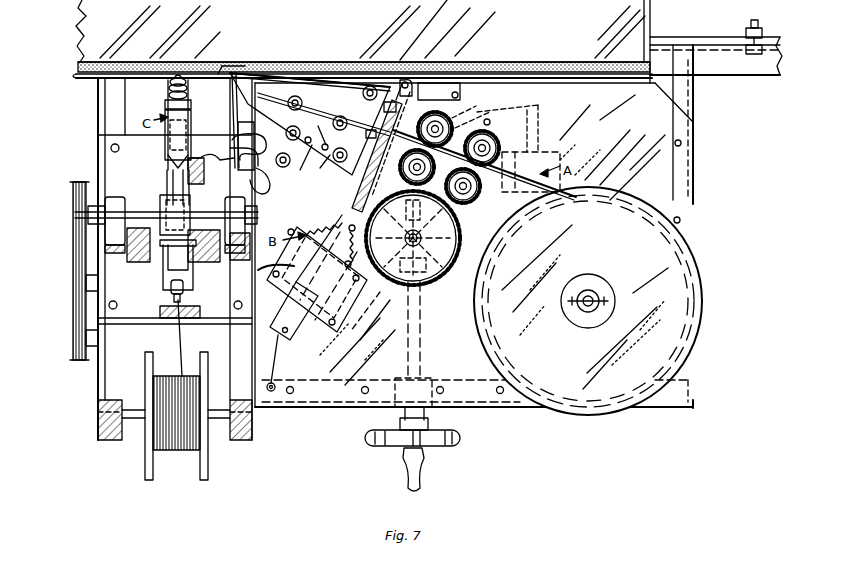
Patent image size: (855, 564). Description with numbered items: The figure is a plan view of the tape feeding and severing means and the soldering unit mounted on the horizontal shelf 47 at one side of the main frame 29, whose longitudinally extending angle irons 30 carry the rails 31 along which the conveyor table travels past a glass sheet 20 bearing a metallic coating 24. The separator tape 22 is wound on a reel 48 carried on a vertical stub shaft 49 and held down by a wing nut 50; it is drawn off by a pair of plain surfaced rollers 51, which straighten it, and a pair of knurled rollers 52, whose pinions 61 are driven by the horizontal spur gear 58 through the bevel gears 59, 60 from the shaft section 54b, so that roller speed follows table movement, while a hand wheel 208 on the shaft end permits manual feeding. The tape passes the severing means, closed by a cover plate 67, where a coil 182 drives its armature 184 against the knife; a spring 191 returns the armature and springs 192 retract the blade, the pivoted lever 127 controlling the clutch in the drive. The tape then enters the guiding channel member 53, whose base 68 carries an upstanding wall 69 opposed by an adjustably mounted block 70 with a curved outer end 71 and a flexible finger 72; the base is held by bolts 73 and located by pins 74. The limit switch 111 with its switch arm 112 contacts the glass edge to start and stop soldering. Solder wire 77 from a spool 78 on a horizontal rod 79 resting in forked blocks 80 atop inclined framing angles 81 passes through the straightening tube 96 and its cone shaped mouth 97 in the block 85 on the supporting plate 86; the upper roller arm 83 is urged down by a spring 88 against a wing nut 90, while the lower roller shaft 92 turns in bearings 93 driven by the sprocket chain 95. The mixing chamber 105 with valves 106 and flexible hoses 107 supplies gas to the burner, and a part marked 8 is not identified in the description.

The glass sheet 20 is at (112, 6).
The separator tape 22 is at (162, 70).
The metallic coating 24 is at (520, 66).
The main frame 29 is at (735, 60).
The angle irons 30 is at (768, 66).
The rails 31 is at (715, 40).
The horizontal shelf 47 is at (660, 190).
The reel 48 is at (668, 290).
The vertical stub shaft 49 is at (584, 310).
The wing nut 50 is at (592, 292).
The plain surfaced feed rollers 51 is at (488, 142).
The knurled feed rollers 52 is at (442, 122).
The guiding channel member 53 is at (301, 165).
The shaft section 54b is at (415, 326).
The horizontal spur gear 58 is at (372, 316).
The bevel gear 59 is at (415, 244).
The bevel gear 60 is at (452, 228).
The pinions 61 is at (508, 146).
The cover plate 67 is at (362, 180).
The base 68 is at (324, 170).
The upstanding wall 69 is at (318, 74).
The adjustably mounted block 70 is at (282, 88).
The curved outer end 71 is at (252, 72).
The flexible finger 72 is at (233, 70).
The bolts 73 is at (324, 127).
The locating pins 74 is at (317, 129).
The solder wire 77 is at (184, 345).
The spool 78 is at (210, 462).
The horizontal rod 79 is at (138, 424).
The forked blocks 80 is at (104, 438).
The inclined framing angles 81 is at (108, 386).
The arm 83 is at (168, 170).
The block 85 is at (194, 278).
The supporting plate 86 is at (142, 316).
The spring 88 is at (165, 104).
The wing nut 90 is at (188, 90).
The shaft 92 is at (148, 212).
The bearings 93 is at (114, 200).
The sprocket chain 95 is at (74, 306).
The straightening tube 96 is at (170, 284).
The cone shaped mouth 97 is at (174, 297).
The mixing chamber 105 is at (242, 140).
The valves 106 is at (240, 128).
The flexible hoses 107 is at (268, 190).
The limit switch 111 is at (452, 88).
The switch arm 112 is at (408, 82).
The pivoted lever 127 is at (520, 118).
The coil 182 is at (318, 306).
The armature 184 is at (292, 346).
The spring 191 is at (278, 383).
The springs 192 is at (346, 232).
The hand wheel 208 is at (462, 438).
The pin 8 is at (381, 113).